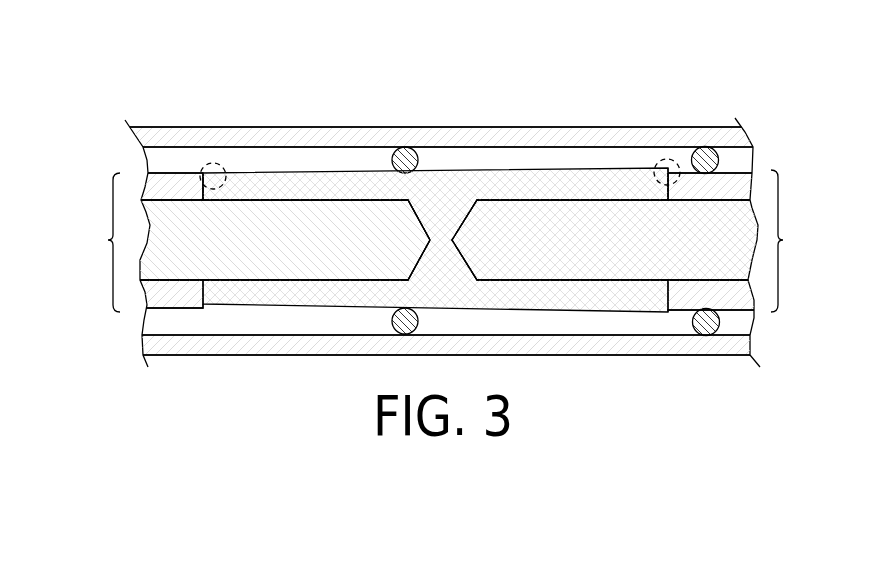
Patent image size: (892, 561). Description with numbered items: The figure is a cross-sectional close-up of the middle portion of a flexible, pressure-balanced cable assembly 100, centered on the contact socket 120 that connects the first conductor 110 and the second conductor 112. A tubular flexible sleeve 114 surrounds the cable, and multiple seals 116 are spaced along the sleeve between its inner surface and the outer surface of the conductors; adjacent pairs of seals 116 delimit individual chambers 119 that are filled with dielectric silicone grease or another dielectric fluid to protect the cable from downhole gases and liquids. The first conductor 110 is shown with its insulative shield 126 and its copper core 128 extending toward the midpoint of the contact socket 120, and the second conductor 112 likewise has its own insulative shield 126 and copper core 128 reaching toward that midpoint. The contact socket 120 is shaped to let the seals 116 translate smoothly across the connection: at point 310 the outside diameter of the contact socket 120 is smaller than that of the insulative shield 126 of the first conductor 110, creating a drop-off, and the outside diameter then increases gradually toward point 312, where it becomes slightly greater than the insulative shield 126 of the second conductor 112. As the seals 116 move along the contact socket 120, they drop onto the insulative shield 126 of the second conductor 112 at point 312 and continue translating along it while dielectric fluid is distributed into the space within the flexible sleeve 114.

The flexible, pressure-balanced cable assembly 100 is at (76, 75).
The first conductor 110 is at (135, 242).
The second conductor 112 is at (747, 240).
The flexible sleeve 114 is at (228, 127).
The seals 116 is at (406, 150).
The individual chambers 119 is at (327, 163).
The contact socket 120 is at (463, 296).
The insulative shield 126 is at (180, 297).
The copper core 128 is at (287, 262).
The point 310 is at (221, 164).
The point 312 is at (659, 162).